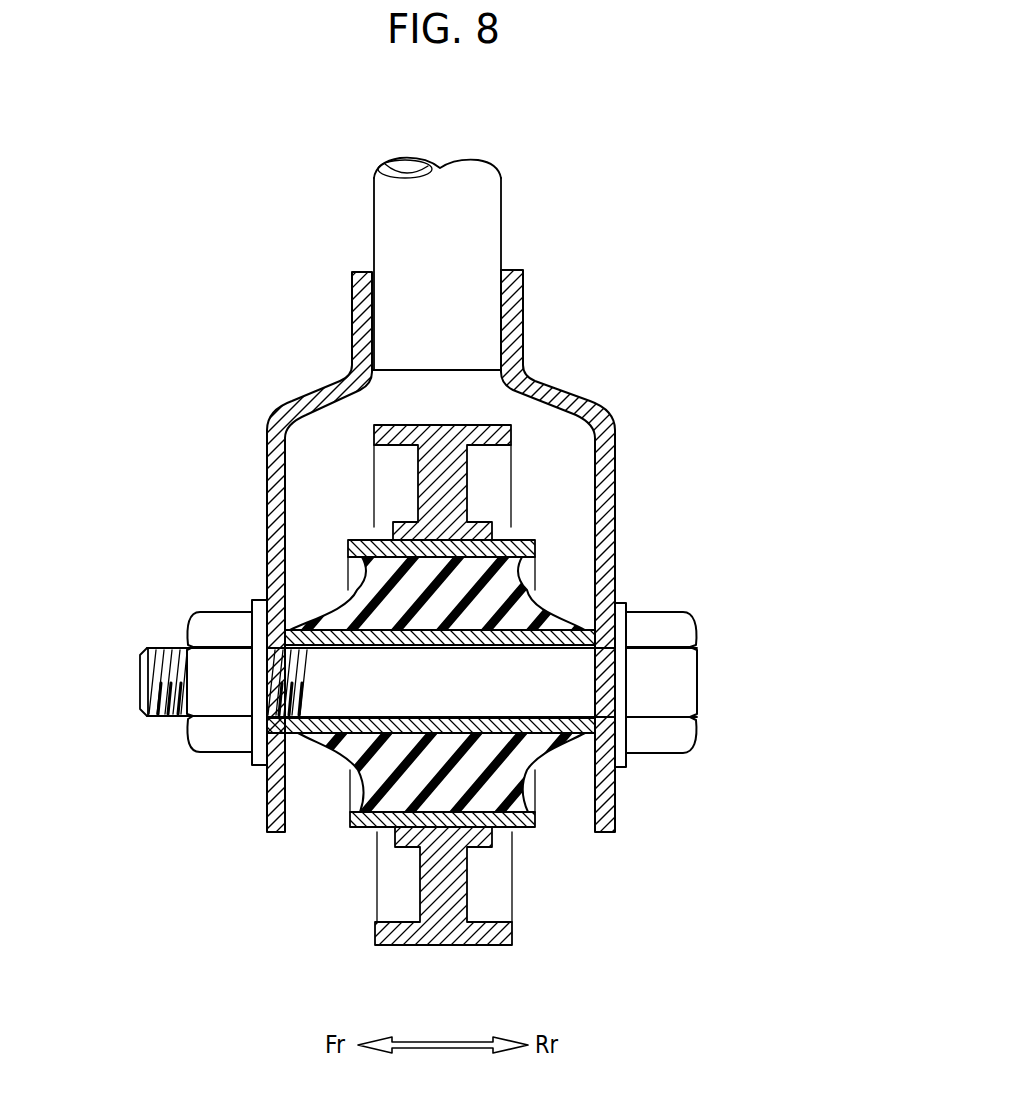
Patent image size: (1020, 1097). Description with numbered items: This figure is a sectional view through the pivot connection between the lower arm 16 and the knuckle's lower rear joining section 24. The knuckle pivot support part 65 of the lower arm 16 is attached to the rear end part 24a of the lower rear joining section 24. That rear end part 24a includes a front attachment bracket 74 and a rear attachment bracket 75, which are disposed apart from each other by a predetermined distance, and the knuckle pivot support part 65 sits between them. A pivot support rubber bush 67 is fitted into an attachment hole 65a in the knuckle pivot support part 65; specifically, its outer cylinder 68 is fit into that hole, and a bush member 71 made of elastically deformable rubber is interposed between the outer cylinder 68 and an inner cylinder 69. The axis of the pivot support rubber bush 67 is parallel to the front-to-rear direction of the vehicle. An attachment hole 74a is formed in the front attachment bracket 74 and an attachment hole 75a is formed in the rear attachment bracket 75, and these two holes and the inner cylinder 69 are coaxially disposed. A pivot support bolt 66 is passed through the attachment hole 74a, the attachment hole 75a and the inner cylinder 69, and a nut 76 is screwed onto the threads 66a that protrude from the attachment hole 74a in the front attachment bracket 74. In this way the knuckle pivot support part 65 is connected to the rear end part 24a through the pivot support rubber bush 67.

The lower rear joining section 24 is at (502, 203).
The rear end part 24a is at (510, 605).
The front attachment bracket 74 is at (267, 478).
The rear attachment bracket 75 is at (747, 297).
The knuckle pivot support part 65 is at (510, 605).
The lower arm 16 is at (467, 483).
The attachment hole 65a is at (525, 572).
The pivot support rubber bush 67 is at (557, 603).
The outer cylinder 68 is at (358, 545).
The inner cylinder 69 is at (453, 720).
The pivot support bolt 66 is at (675, 698).
The threads 66a is at (150, 690).
The nut 76 is at (205, 742).
The attachment hole 74a is at (262, 665).
The attachment hole 75a is at (603, 648).
The bush member 71 is at (377, 782).